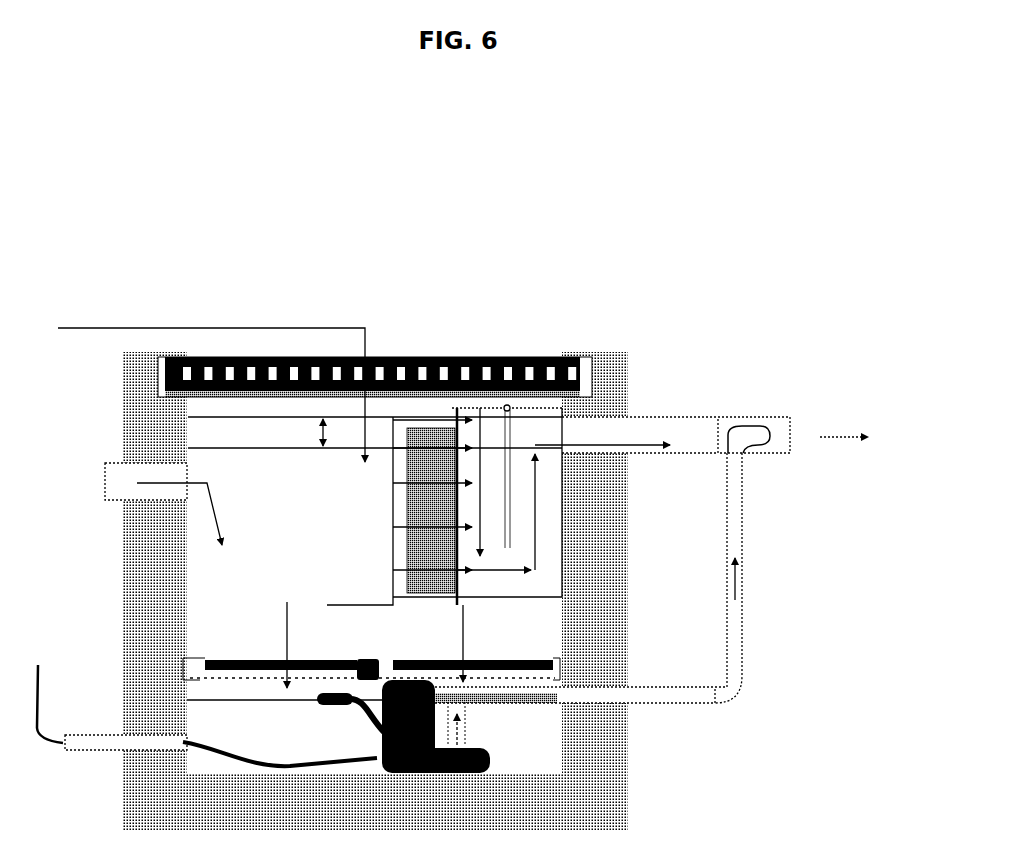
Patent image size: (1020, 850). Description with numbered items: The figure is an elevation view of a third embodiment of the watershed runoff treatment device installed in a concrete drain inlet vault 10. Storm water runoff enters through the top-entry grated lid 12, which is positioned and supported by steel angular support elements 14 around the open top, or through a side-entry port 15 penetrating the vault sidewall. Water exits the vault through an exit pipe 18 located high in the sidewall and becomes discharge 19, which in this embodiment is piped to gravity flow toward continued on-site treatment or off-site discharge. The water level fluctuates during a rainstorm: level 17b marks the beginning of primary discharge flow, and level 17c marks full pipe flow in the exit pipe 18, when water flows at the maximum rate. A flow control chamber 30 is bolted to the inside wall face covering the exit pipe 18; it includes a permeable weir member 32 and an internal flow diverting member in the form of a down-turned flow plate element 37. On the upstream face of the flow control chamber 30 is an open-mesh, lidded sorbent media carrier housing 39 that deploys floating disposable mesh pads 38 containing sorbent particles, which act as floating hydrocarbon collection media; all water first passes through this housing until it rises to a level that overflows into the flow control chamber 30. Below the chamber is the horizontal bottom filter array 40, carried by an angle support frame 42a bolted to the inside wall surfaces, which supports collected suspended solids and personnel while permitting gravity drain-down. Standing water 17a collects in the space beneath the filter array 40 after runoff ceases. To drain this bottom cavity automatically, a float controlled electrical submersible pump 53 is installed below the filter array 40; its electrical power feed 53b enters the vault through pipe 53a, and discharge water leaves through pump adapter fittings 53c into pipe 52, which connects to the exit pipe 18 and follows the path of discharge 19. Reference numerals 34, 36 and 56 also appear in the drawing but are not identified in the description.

The drain inlet vault 10 is at (122, 596).
The grated lid 12 is at (275, 358).
The steel angular support elements 14 is at (590, 356).
The side-entry port 15 is at (118, 462).
The standing water 17a is at (247, 703).
The water level at beginning of primary discharge flow 17b is at (298, 452).
The water level of full pipe flow 17c is at (282, 418).
The exit pipe 18 is at (645, 417).
The discharge 19 is at (868, 436).
The flow control chamber 30 is at (547, 578).
The permeable weir member 32 is at (467, 588).
The vent 34 is at (452, 408).
The filter media 36 is at (410, 449).
The down-turned flow plate element 37 is at (512, 487).
The floating disposable mesh pads 38 is at (557, 698).
The sorbent media carrier housing 39 is at (440, 592).
The horizontal bottom filter array 40 is at (245, 658).
The angle support frame 42a is at (362, 664).
The pump discharge pipe 52 is at (630, 687).
The float controlled electrical submersible pump 53 is at (382, 738).
The pipe for electrical power feed 53a is at (183, 743).
The electrical power feed 53b is at (53, 747).
The pump adapter fittings 53c is at (466, 709).
The flow direction 56 is at (666, 690).